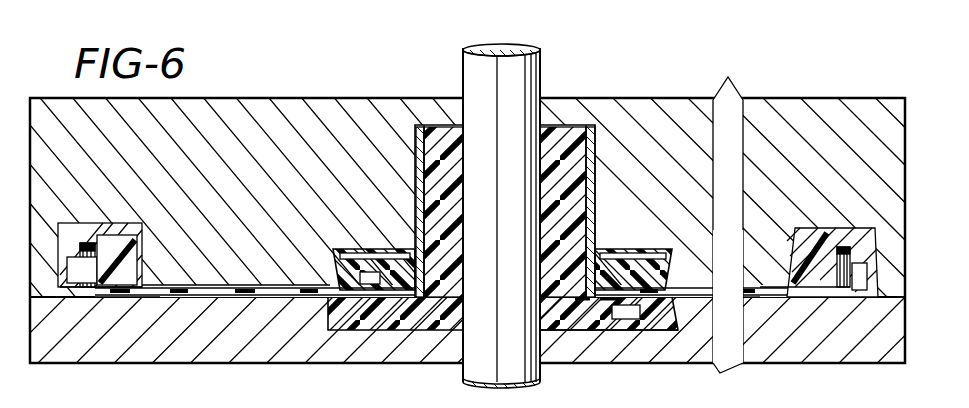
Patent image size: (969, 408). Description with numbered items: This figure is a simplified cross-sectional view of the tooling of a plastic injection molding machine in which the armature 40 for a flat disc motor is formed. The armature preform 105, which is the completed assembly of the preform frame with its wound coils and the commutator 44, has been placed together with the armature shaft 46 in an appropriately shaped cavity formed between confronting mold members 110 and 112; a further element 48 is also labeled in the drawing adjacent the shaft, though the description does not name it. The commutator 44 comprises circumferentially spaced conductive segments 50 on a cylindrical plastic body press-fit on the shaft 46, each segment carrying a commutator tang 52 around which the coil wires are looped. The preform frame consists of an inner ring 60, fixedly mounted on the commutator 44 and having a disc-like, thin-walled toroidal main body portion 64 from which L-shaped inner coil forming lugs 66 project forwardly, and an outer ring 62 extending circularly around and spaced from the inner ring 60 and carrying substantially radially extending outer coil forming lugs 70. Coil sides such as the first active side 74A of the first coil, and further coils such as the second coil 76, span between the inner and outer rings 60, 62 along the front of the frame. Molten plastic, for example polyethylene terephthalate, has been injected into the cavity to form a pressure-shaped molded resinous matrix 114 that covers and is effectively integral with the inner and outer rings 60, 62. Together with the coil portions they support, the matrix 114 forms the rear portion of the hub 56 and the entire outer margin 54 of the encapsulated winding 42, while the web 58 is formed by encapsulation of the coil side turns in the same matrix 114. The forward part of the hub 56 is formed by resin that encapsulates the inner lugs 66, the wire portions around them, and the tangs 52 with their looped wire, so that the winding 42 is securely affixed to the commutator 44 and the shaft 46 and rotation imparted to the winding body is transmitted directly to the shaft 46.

The armature 40 is at (155, 300).
The encapsulated winding 42 is at (56, 254).
The commutator 44 is at (600, 147).
The armature shaft 46 is at (490, 66).
The bushing 48 is at (440, 127).
The conductive segments 50 is at (415, 127).
The commutator tangs 52 is at (472, 310).
The outer ring 54 is at (64, 242).
The inner hub 56 is at (383, 300).
The circular web 58 is at (260, 297).
The inner ring 60 is at (376, 247).
The outer ring 62 is at (140, 245).
The main body portion 64 is at (643, 266).
The inner coil forming lugs 66 is at (645, 312).
The outer coil forming lugs 70 is at (70, 274).
The first active side 74A is at (205, 297).
The second coil 76 is at (744, 303).
The armature preform 105 is at (103, 300).
The mold member 110 is at (722, 206).
The mold member 112 is at (719, 313).
The molded resinous matrix 114 is at (588, 337).